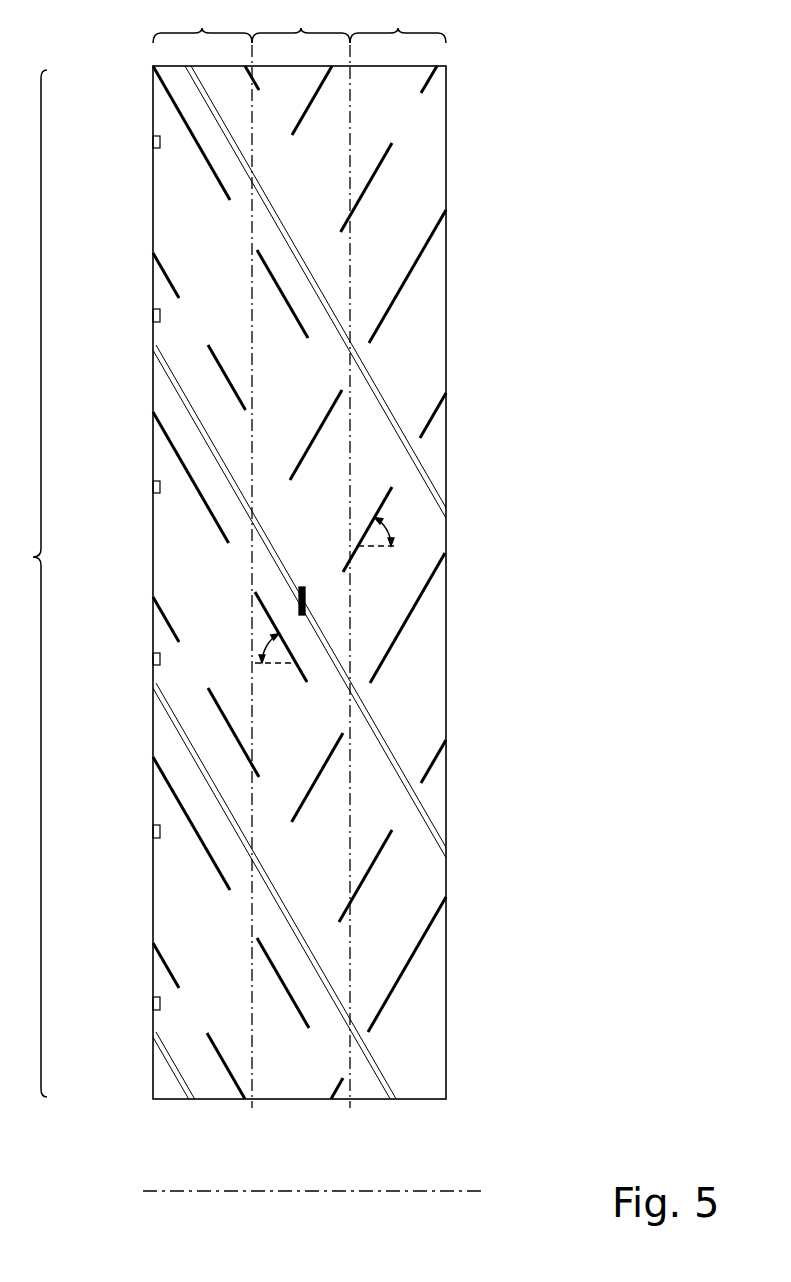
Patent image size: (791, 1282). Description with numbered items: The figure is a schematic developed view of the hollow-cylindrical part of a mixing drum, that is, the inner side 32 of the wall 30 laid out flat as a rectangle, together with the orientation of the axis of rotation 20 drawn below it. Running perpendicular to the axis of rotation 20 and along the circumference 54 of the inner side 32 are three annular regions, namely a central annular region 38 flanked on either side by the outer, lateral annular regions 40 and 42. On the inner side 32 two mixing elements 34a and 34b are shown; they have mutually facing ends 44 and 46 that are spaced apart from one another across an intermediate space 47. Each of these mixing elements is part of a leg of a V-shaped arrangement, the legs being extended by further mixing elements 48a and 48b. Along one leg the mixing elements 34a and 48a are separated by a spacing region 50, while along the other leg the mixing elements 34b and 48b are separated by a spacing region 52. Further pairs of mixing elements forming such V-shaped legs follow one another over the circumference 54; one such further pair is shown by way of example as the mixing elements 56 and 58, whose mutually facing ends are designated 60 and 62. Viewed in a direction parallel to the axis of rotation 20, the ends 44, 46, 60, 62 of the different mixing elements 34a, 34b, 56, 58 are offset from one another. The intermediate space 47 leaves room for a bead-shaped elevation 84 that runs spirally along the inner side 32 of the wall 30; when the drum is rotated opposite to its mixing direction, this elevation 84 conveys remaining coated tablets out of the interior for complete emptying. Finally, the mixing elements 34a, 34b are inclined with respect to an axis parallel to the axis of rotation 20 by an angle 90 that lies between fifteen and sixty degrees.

The axis of rotation 20 is at (450, 1192).
The wall 30 is at (470, 142).
The inner side 32 is at (425, 330).
The mixing element 34a is at (268, 616).
The mixing element 34b is at (391, 490).
The central annular region 38 is at (301, 554).
The lateral annular region 40 is at (202, 554).
The lateral annular region 42 is at (398, 21).
The end 44 is at (307, 682).
The end 46 is at (343, 572).
The intermediate space 47 is at (348, 625).
The further mixing element 48a is at (208, 507).
The further mixing element 48b is at (433, 415).
The spacing region 50 is at (236, 575).
The spacing region 52 is at (438, 472).
The circumference 54 is at (25, 583).
The mixing element 56 is at (210, 690).
The mixing element 58 is at (330, 763).
The end 60 is at (258, 778).
The end 62 is at (293, 821).
The bead-shaped elevation 84 is at (173, 365).
The angle 90 is at (393, 526).